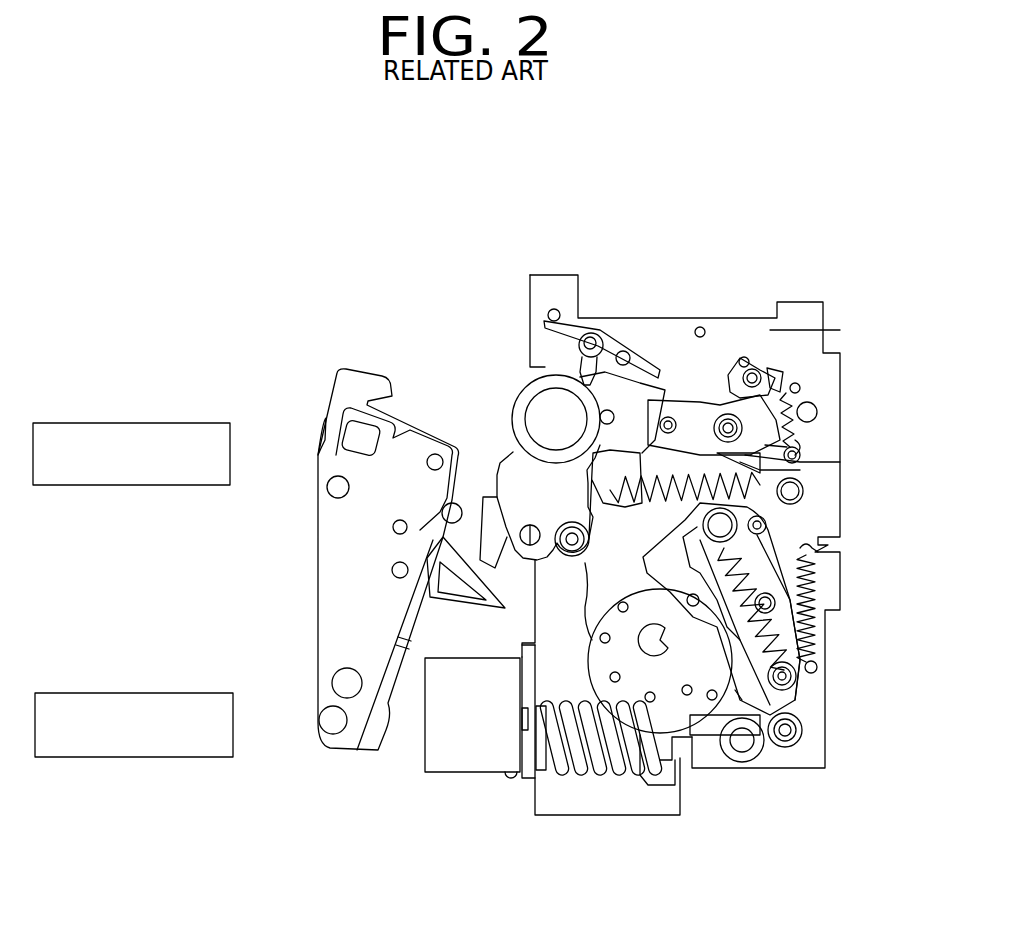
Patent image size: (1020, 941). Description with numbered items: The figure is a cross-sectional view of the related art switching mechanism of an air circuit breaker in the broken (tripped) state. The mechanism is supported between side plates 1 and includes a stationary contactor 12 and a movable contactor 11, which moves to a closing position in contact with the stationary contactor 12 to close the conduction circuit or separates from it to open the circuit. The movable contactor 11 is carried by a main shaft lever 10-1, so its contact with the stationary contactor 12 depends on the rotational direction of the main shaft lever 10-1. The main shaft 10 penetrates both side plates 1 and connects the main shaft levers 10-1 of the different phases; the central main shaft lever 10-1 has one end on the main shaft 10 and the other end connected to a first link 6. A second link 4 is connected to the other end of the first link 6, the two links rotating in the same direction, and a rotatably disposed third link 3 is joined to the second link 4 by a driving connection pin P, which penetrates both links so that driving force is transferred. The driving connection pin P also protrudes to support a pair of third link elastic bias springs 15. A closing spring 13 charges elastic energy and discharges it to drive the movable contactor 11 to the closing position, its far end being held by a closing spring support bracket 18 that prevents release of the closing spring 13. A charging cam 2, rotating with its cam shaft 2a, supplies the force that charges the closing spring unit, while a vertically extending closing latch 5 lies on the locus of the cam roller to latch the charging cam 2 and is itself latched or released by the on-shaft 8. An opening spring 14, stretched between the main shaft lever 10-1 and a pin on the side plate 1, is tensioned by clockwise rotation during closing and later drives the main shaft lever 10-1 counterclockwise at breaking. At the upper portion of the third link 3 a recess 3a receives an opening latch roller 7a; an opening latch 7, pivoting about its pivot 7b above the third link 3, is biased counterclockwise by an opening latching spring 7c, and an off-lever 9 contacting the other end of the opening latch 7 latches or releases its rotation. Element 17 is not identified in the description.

The side plate 1 is at (830, 371).
The charging cam 2 is at (684, 730).
The cam shaft 2a is at (651, 645).
The third link 3 is at (792, 697).
The recess 3a is at (787, 447).
The second link 4 is at (780, 616).
The closing latch 5 is at (820, 551).
The first link 6 is at (785, 520).
The opening latch 7 is at (805, 465).
The opening latch roller 7a is at (668, 418).
The pivot 7b is at (728, 414).
The opening latching spring 7c is at (800, 428).
The on-shaft 8 is at (742, 358).
The off-lever 9 is at (597, 345).
The main shaft 10 is at (547, 408).
The main shaft lever 10-1 is at (532, 502).
The movable contactor 11 is at (345, 378).
The stationary contactor 12 is at (92, 437).
The closing spring 13 is at (597, 777).
The opening spring 14 is at (649, 472).
The third link elastic bias spring 15 is at (813, 635).
The spring 17 is at (800, 590).
The closing spring support bracket 18 is at (460, 757).
The driving connection pin P is at (793, 678).